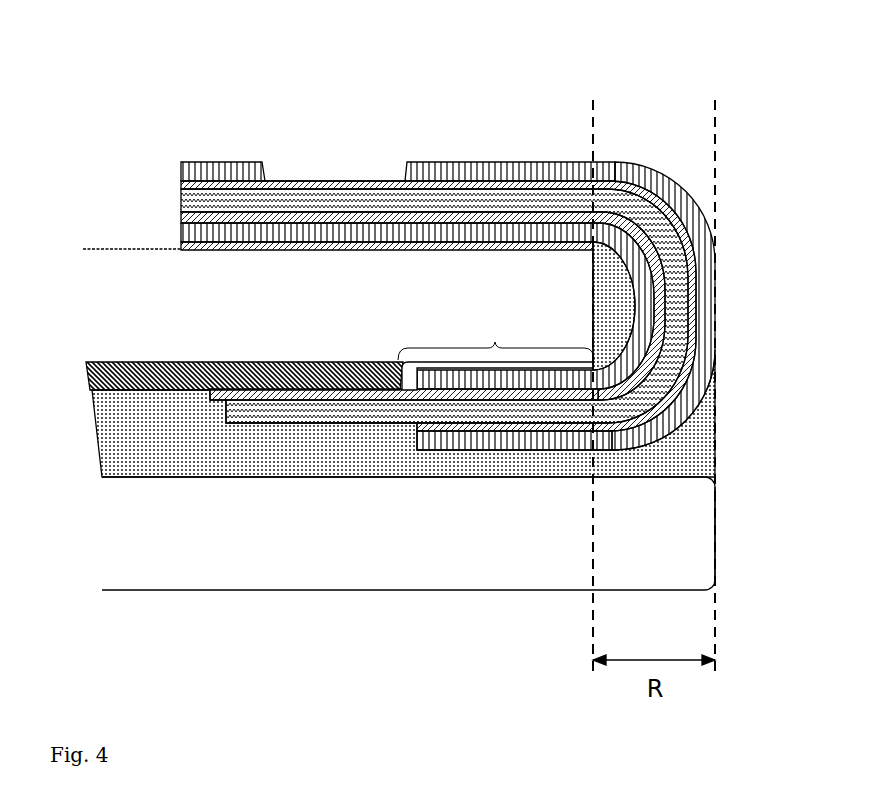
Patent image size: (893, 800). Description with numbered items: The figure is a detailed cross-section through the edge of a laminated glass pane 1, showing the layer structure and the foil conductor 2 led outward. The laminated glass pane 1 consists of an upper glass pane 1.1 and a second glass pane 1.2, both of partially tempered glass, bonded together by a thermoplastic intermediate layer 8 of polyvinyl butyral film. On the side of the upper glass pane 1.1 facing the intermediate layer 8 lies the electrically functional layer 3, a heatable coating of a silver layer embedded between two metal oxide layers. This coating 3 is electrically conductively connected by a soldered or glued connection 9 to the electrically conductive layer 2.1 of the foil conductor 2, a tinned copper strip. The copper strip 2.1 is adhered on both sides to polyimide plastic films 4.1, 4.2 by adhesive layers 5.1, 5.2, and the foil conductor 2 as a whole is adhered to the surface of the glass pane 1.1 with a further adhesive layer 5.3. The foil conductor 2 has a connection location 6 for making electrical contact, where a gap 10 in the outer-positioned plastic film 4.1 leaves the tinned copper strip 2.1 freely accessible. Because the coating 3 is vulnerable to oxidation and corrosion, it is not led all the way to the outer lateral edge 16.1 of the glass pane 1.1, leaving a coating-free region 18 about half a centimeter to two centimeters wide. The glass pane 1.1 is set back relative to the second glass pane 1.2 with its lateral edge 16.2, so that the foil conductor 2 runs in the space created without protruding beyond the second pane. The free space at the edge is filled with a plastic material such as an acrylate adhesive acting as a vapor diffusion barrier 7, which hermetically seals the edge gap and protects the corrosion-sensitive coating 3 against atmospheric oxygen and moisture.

The laminated glass pane 1 is at (118, 592).
The glass pane 1.1 is at (190, 318).
The glass pane 1.2 is at (182, 528).
The foil conductor 2 is at (180, 160).
The electrically conductive layer of foil conductor 2.1 is at (640, 405).
The electrically functional layer 3 is at (85, 367).
The electrically insulating foil 4.1 is at (622, 167).
The electrically insulating foil 4.2 is at (658, 170).
The adhesive layer 5.1 is at (640, 232).
The adhesive layer 5.2 is at (690, 285).
The adhesive layer 5.3 is at (180, 240).
The connection location 6 is at (310, 184).
The vapor diffusion barrier 7 is at (617, 311).
The thermoplastic intermediate layer 8 is at (303, 458).
The electrical line connection 9 is at (210, 392).
The gap in insulating foil 10 is at (348, 170).
The lateral edge of glass pane 16.1 is at (596, 338).
The lateral edge of glass pane 16.2 is at (718, 540).
The coating-free region 18 is at (496, 335).